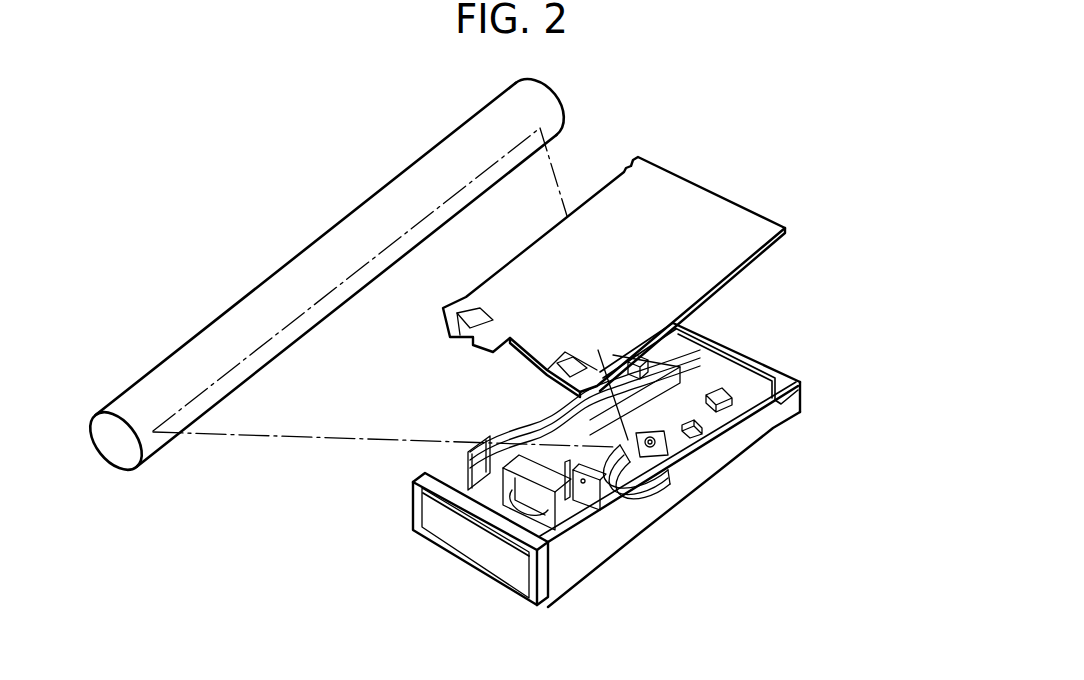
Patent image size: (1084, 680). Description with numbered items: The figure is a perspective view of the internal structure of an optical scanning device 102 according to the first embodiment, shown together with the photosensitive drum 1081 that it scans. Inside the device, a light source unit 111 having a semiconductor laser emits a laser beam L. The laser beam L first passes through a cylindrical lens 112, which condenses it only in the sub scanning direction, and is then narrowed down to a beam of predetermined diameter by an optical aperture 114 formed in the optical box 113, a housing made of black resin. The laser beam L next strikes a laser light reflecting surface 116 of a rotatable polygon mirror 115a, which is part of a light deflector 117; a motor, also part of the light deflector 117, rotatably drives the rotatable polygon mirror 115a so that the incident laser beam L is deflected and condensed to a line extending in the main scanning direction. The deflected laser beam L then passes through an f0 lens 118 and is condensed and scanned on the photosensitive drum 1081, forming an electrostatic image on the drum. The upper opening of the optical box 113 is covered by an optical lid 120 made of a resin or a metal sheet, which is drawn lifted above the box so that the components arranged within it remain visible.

The image reading unit 102 is at (757, 141).
The photosensitive drum 1081 is at (290, 285).
The optical lid 120 is at (683, 205).
The light deflector 117 is at (698, 407).
The optical box 113 is at (773, 412).
The rotatable polygon mirror 115a is at (670, 445).
The laser light reflecting surface 116 is at (640, 447).
The laser beam L is at (605, 495).
The optical aperture 114 is at (605, 507).
The cylindrical lens 112 is at (577, 508).
The light source unit 111 is at (470, 538).
The f0 lens 118 is at (522, 430).